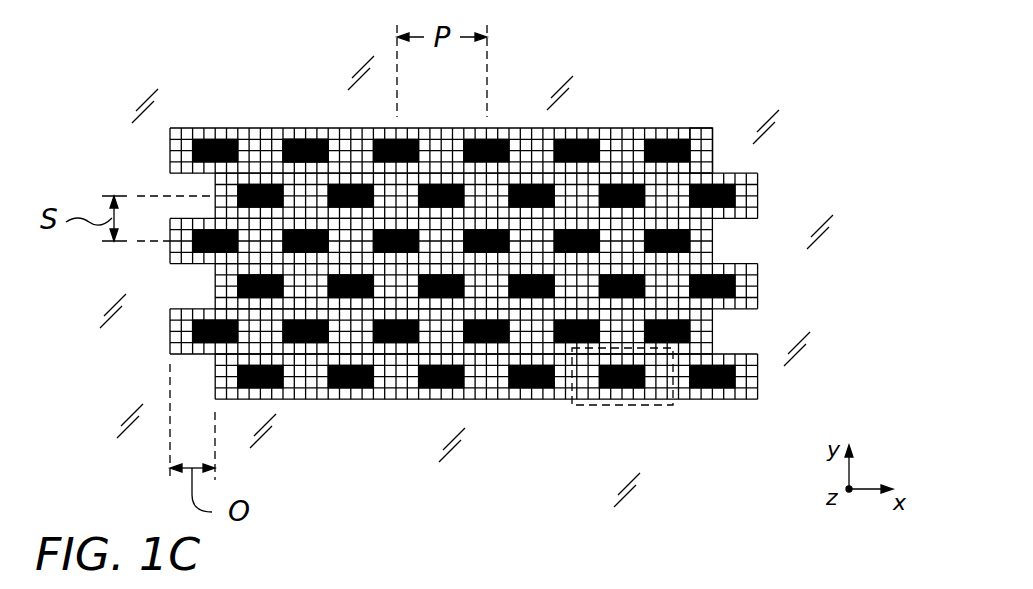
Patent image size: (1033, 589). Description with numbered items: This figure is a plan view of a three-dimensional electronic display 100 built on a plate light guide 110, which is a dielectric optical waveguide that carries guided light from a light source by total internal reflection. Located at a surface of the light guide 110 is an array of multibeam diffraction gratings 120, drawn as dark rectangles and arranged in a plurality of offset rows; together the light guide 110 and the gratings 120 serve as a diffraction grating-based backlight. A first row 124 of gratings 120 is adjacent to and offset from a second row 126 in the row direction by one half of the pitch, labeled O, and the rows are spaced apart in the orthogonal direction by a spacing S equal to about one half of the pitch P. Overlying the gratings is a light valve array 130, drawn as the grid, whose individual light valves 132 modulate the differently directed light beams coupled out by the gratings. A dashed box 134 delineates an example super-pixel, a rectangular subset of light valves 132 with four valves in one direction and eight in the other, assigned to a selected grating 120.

The 3D electronic display 100 is at (551, 237).
The light guide 110 is at (557, 450).
The multibeam diffraction grating 120 is at (302, 130).
The first row 124 is at (735, 242).
The second row 126 is at (782, 195).
The light valve array 130 is at (708, 120).
The light valve 132 is at (697, 128).
The unit region 134 is at (622, 407).